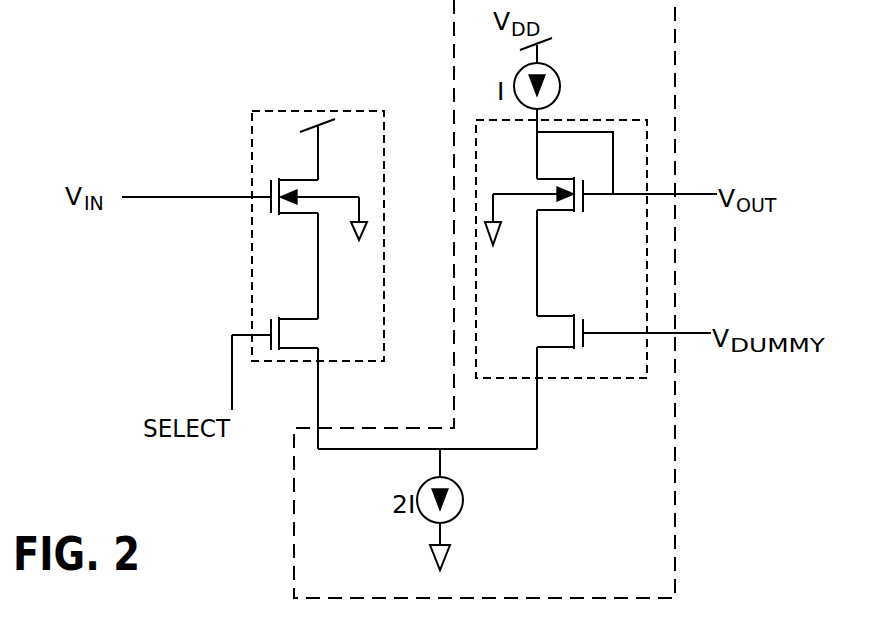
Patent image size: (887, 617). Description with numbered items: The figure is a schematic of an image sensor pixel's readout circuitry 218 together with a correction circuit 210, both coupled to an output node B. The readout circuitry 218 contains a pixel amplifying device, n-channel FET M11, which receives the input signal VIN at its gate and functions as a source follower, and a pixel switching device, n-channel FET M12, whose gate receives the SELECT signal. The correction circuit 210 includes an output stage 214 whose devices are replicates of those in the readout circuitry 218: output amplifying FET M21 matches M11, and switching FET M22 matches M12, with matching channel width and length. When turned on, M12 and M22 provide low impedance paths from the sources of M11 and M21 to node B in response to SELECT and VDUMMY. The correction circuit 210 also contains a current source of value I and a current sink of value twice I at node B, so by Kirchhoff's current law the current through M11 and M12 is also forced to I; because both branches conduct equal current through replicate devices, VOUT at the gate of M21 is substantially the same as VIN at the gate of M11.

The correction circuit 210 is at (680, 463).
The readout circuitry 218 is at (272, 280).
The output stage 214 is at (561, 298).
The output node B is at (318, 398).
The pixel amplifying device M11 is at (322, 179).
The pixel switching device M12 is at (299, 337).
The output amplifying device M21 is at (531, 201).
The replicate switching device M22 is at (535, 333).